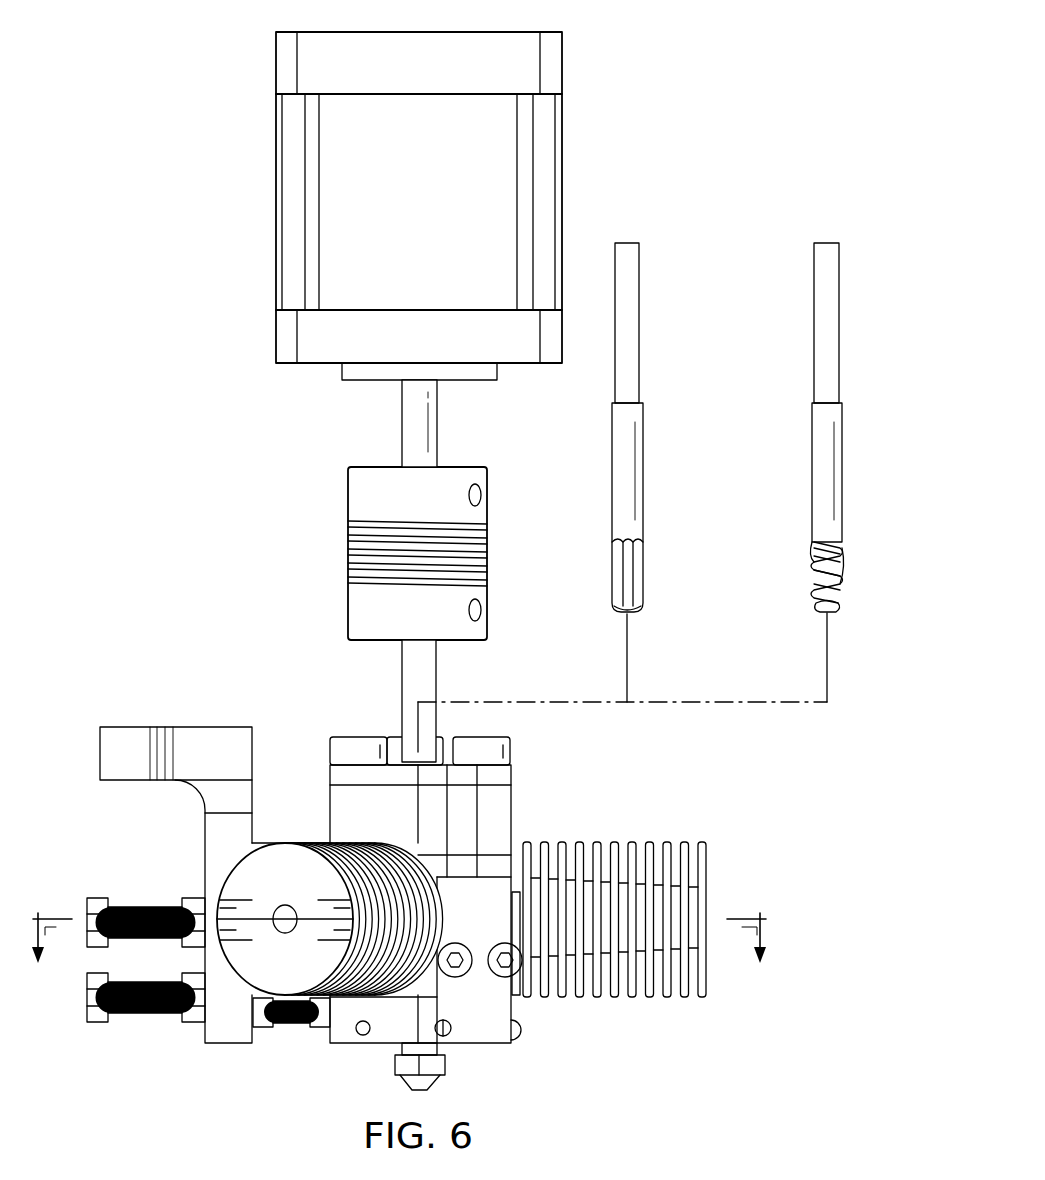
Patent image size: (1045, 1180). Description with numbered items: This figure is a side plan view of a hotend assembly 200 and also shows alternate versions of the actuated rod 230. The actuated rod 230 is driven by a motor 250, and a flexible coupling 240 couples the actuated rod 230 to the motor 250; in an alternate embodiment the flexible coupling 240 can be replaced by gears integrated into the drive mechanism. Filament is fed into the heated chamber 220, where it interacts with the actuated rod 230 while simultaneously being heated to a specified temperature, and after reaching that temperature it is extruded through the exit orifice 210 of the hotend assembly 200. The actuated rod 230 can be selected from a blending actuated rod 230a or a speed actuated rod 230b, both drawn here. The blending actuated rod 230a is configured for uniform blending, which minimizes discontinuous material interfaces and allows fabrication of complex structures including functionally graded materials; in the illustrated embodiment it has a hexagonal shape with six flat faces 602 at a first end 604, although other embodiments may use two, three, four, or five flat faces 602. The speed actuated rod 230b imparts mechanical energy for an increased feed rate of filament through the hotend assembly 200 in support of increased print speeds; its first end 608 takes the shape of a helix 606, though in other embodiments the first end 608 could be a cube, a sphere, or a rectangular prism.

The hotend assembly 200 is at (648, 52).
The motor 250 is at (276, 201).
The flexible coupling 240 is at (348, 503).
The actuated rod 230 is at (402, 680).
The blending actuated rod 230a is at (650, 520).
The speed actuated rod 230b is at (850, 520).
The flat faces 602 is at (612, 573).
The first end 604 is at (650, 613).
The helix 606 is at (812, 573).
The first end 608 is at (848, 612).
The heated chamber 220 is at (350, 1046).
The exit orifice 210 is at (446, 1065).